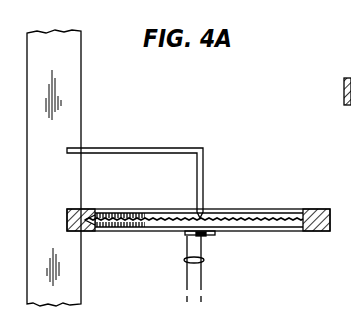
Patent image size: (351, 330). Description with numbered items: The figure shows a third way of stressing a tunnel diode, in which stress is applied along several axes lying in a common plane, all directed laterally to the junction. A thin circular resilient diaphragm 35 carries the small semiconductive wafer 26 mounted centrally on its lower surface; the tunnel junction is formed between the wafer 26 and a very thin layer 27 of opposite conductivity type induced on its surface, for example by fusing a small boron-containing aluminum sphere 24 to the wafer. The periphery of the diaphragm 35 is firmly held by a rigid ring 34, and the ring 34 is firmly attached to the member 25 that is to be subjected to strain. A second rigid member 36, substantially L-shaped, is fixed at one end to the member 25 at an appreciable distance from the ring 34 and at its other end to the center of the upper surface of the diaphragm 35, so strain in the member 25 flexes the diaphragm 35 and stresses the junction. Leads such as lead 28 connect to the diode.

The member 25 is at (79, 90).
The second rigid member 36 is at (204, 173).
The thin circular resilient diaphragm 35 is at (276, 216).
The rigid ring 34 is at (288, 231).
The layer 27 is at (206, 234).
The semiconductive wafer 26 is at (214, 229).
The aluminum sphere 24 is at (201, 236).
The lead wire 28 is at (205, 260).